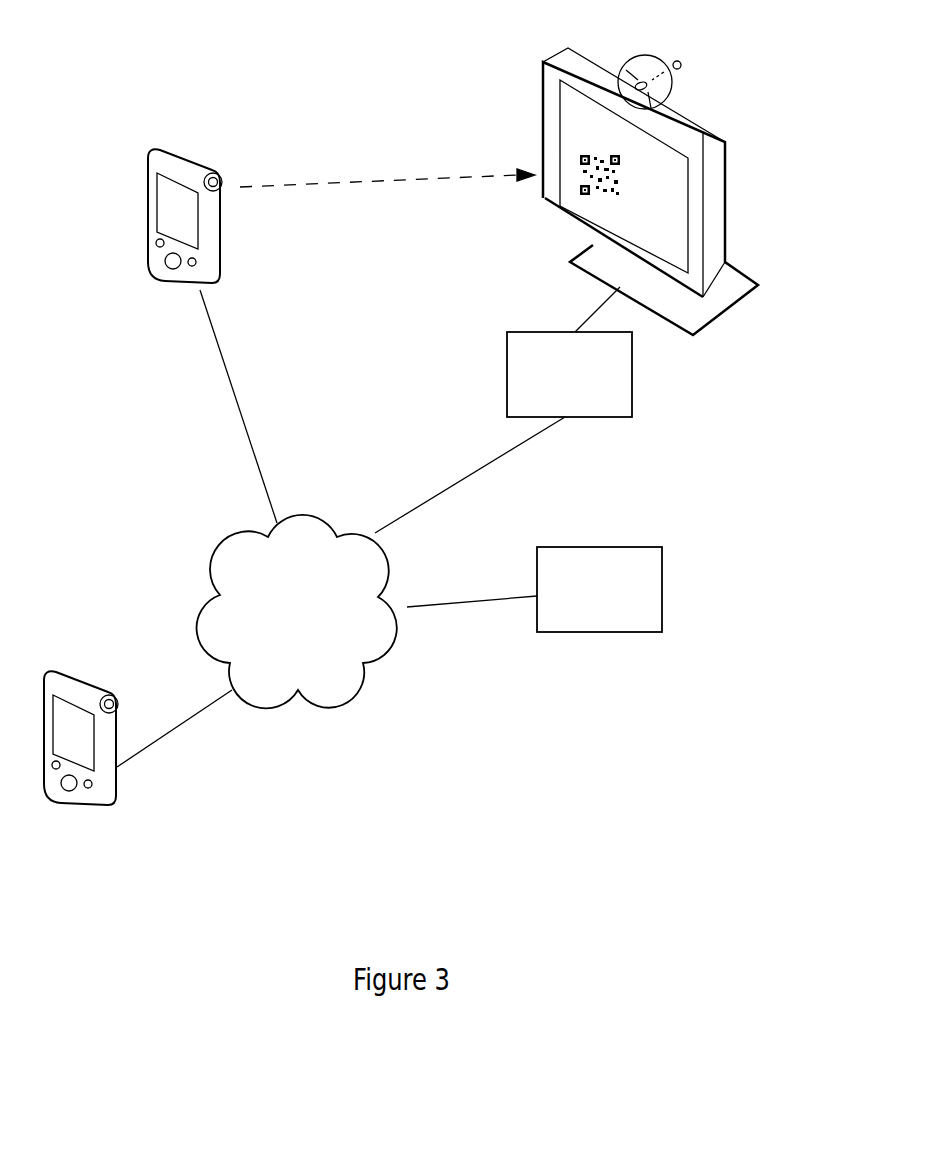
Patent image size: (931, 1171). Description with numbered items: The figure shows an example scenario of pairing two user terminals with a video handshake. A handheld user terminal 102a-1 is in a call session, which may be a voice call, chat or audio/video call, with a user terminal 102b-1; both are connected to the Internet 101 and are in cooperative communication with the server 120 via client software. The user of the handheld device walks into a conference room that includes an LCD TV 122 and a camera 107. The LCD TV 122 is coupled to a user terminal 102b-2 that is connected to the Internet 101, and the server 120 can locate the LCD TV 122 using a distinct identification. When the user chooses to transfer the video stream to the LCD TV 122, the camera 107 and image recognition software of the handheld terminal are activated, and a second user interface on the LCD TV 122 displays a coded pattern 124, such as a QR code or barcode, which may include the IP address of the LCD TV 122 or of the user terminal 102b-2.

The Internet 101 is at (289, 644).
The user terminal 102a-1 is at (180, 154).
The user terminal 102b-1 is at (73, 677).
The user terminal 102b-2 is at (630, 410).
The camera 107 is at (230, 182).
The server 120 is at (660, 592).
The LCD TV 122 is at (727, 170).
The coded pattern 124 is at (582, 177).